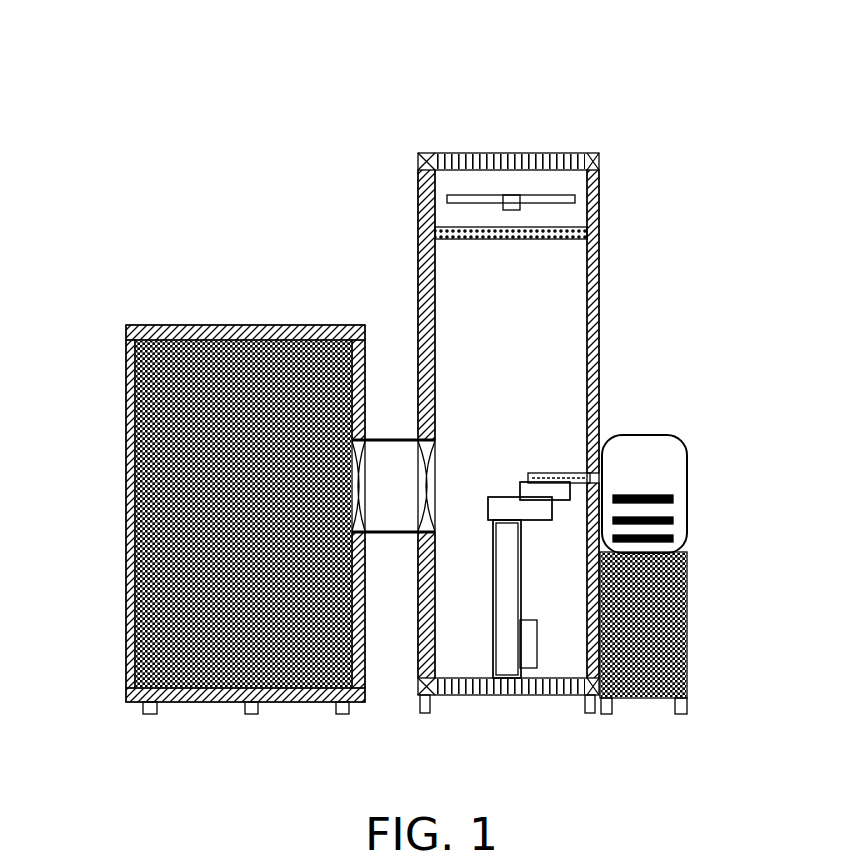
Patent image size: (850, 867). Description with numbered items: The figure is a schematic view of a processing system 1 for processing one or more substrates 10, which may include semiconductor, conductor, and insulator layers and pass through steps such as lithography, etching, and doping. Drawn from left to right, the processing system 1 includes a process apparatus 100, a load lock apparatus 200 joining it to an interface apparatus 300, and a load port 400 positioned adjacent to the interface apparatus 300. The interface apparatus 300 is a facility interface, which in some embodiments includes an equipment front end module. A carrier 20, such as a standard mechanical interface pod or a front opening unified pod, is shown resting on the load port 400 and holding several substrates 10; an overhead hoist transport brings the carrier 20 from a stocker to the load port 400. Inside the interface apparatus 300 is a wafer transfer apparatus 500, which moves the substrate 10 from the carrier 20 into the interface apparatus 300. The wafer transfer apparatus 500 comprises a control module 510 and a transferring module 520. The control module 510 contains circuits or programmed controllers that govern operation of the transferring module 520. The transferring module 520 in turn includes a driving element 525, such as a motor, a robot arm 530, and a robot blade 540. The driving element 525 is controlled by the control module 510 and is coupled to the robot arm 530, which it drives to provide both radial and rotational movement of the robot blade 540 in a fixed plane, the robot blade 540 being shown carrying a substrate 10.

The processing system 1 is at (778, 128).
The process apparatus 100 is at (108, 317).
The load lock apparatus 200 is at (395, 412).
The interface apparatus 300 is at (616, 135).
The wafer transfer apparatus 500 is at (503, 478).
The robot arm 530 is at (500, 508).
The robot blade 540 is at (560, 495).
The transferring module 520 is at (491, 599).
The driving element 525 is at (507, 652).
The control module 510 is at (532, 643).
The substrate 10 is at (556, 472).
The carrier 20 is at (690, 440).
The load port 400 is at (695, 635).